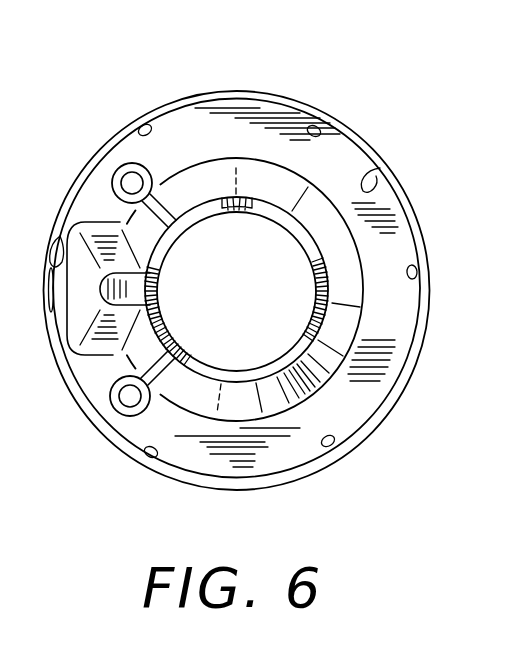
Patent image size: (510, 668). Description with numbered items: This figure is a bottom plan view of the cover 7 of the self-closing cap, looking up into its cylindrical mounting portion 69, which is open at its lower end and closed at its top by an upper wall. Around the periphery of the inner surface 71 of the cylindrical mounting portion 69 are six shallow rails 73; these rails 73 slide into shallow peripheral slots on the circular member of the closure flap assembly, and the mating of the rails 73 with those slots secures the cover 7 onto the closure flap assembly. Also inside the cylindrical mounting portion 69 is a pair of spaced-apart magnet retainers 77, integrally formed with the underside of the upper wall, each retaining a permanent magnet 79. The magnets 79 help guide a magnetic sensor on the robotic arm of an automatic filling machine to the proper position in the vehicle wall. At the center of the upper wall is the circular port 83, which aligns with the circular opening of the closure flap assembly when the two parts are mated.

The cover 7 is at (90, 104).
The cylindrical mounting portion 69 is at (368, 153).
The inner surface 71 is at (372, 177).
The rails 73 is at (146, 133).
The magnet retainers 77 is at (147, 168).
The permanent magnets 79 is at (123, 182).
The circular port 83 is at (178, 228).